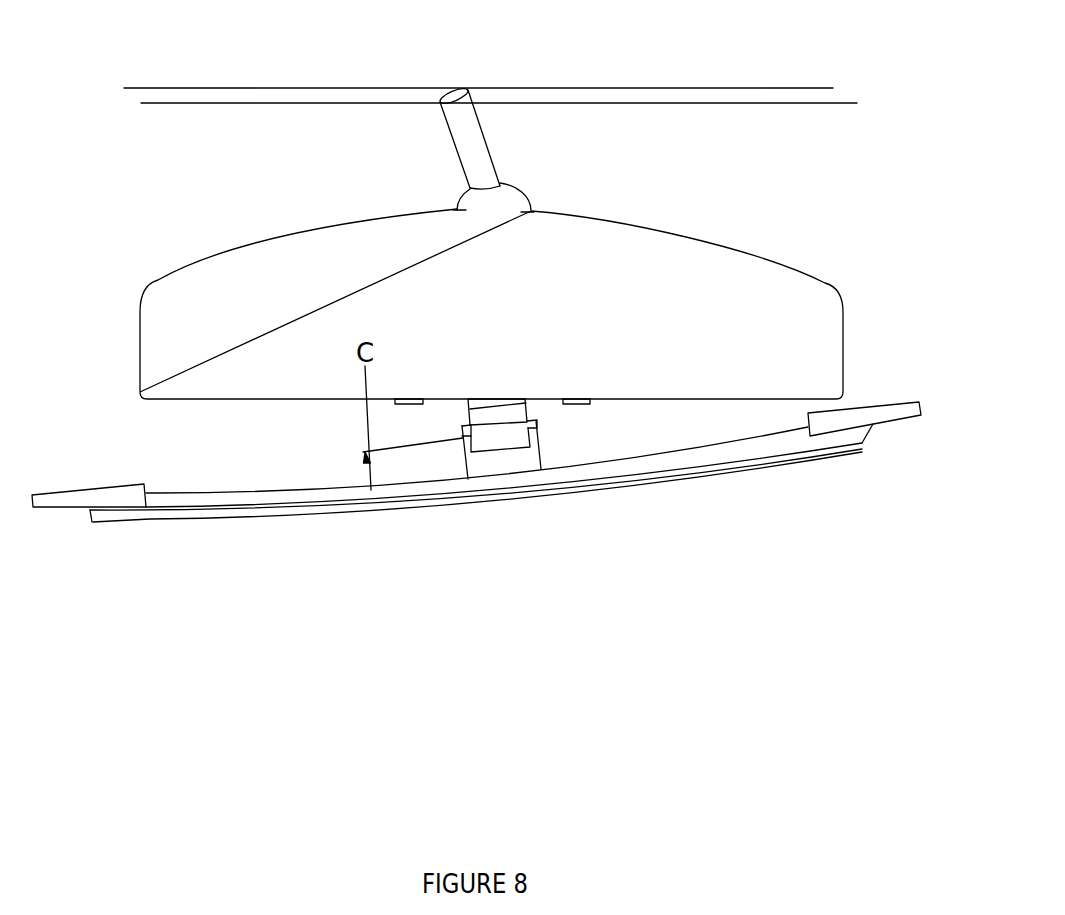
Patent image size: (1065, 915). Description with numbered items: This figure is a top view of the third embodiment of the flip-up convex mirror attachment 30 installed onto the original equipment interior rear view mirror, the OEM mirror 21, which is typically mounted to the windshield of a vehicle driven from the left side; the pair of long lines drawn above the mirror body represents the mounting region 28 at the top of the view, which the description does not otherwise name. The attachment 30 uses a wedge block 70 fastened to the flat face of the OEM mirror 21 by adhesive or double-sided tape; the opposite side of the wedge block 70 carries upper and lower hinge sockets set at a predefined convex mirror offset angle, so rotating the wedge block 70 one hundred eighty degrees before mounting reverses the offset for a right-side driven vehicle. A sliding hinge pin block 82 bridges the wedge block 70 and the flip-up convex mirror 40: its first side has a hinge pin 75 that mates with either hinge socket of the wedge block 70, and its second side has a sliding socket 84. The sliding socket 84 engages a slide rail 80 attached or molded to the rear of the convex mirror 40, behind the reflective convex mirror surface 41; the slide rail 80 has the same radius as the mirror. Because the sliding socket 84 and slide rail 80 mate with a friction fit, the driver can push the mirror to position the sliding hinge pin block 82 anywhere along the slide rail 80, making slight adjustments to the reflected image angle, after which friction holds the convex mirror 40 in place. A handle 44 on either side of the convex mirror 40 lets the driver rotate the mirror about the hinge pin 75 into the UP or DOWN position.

The OEM mirror 21 is at (447, 245).
The ceiling 28 is at (580, 88).
The flip-up convex mirror attachment 30 is at (698, 193).
The flip-up convex mirror 40 is at (452, 502).
The reflective convex mirror surface 41 is at (318, 518).
The handle 44 is at (865, 440).
The wedge block 70 is at (505, 428).
The hinge pin 75 is at (532, 437).
The slide rail 80 is at (272, 500).
The sliding hinge pin block 82 is at (547, 467).
The sliding socket 84 is at (531, 457).